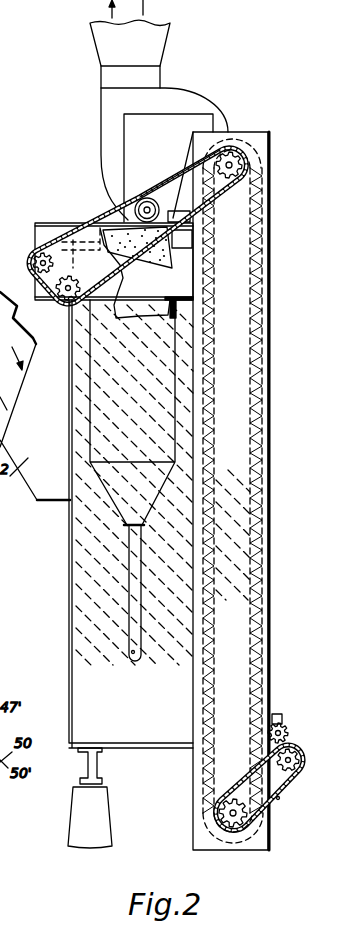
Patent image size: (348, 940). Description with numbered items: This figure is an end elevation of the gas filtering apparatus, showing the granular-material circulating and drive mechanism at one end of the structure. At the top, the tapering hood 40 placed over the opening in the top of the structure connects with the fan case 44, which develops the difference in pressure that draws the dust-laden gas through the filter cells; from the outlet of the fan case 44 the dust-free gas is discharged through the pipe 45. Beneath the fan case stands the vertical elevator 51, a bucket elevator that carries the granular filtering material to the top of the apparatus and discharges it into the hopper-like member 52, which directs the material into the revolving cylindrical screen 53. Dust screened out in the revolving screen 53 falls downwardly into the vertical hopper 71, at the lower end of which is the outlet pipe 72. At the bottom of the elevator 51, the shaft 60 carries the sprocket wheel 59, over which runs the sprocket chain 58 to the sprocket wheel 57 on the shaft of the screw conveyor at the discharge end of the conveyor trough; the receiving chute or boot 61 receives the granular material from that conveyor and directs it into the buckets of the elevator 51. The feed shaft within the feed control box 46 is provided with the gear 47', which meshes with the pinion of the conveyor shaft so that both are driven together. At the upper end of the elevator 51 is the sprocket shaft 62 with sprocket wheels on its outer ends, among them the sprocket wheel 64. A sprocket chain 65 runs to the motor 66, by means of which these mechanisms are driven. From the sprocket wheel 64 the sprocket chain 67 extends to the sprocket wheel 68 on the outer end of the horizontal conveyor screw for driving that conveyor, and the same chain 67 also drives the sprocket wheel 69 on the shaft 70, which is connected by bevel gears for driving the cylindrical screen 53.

The hood 40 is at (124, 214).
The fan case 44 is at (110, 146).
The pipe 45 is at (106, 41).
The feed control box 46 is at (283, 727).
The gear 47' is at (285, 695).
The elevator 51 is at (221, 703).
The hopper-like member 52 is at (190, 166).
The revolving cylindrical screen 53 is at (146, 256).
The sprocket wheel 57 is at (291, 772).
The sprocket chain 58 is at (243, 792).
The sprocket wheel 59 is at (228, 806).
The shaft 60 is at (232, 808).
The receiving chute or boot 61 is at (279, 800).
The sprocket shaft 62 is at (241, 165).
The sprocket wheel 64 is at (232, 163).
The sprocket chain 65 is at (165, 189).
The motor 66 is at (147, 206).
The sprocket chain 67 is at (70, 238).
The sprocket wheel 68 is at (67, 301).
The sprocket wheel 69 is at (42, 256).
The shaft 70 is at (33, 258).
The vertical hopper 71 is at (160, 385).
The outlet pipe 72 is at (135, 632).